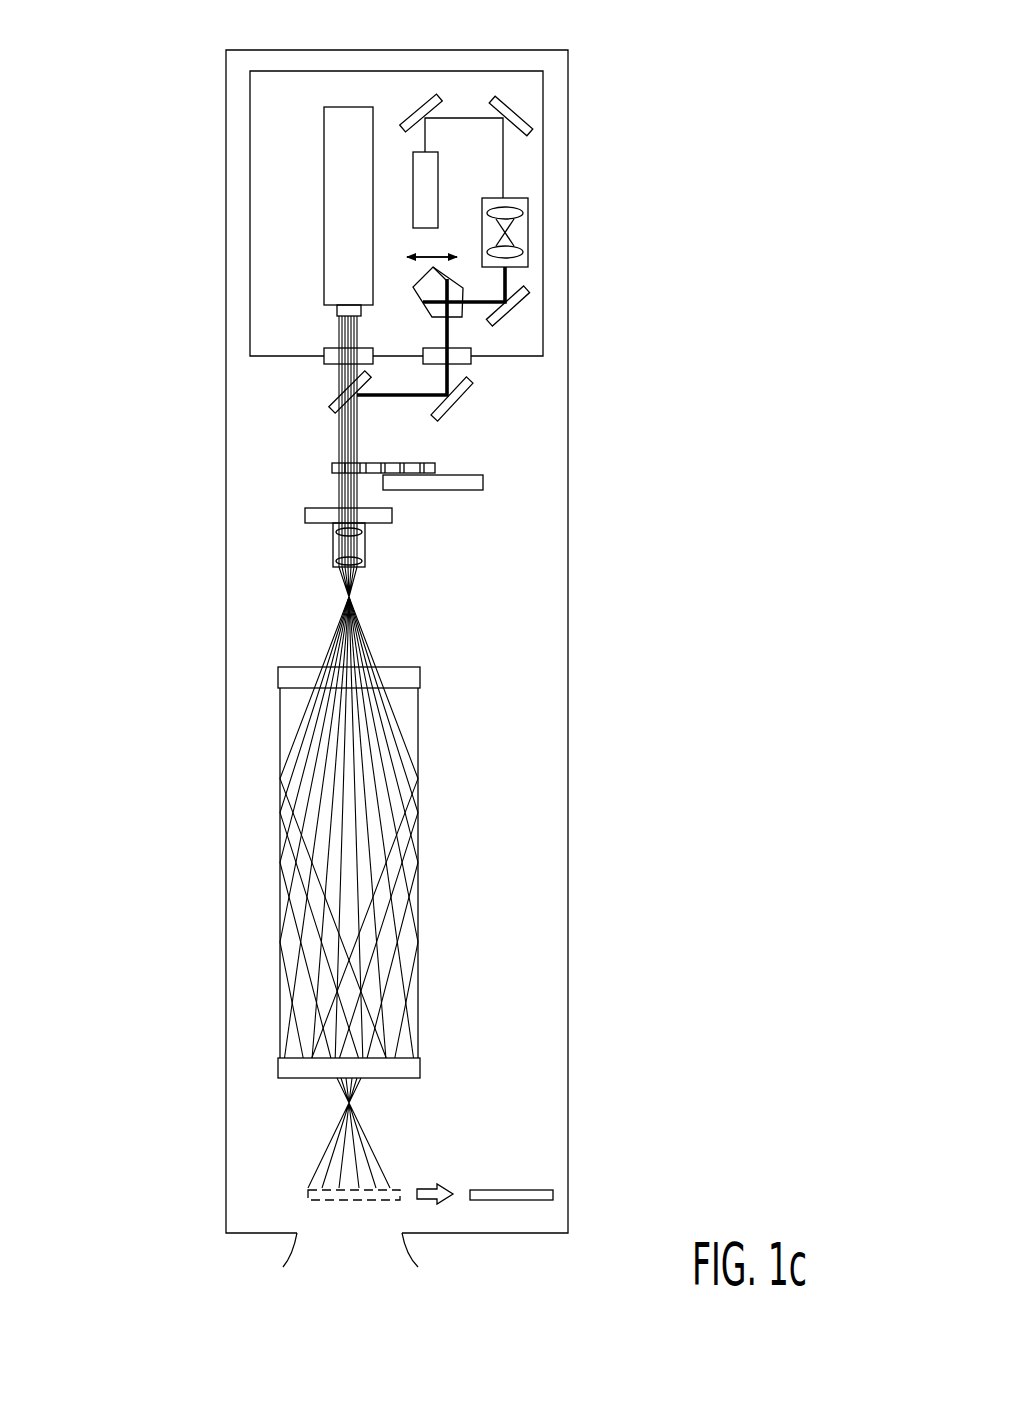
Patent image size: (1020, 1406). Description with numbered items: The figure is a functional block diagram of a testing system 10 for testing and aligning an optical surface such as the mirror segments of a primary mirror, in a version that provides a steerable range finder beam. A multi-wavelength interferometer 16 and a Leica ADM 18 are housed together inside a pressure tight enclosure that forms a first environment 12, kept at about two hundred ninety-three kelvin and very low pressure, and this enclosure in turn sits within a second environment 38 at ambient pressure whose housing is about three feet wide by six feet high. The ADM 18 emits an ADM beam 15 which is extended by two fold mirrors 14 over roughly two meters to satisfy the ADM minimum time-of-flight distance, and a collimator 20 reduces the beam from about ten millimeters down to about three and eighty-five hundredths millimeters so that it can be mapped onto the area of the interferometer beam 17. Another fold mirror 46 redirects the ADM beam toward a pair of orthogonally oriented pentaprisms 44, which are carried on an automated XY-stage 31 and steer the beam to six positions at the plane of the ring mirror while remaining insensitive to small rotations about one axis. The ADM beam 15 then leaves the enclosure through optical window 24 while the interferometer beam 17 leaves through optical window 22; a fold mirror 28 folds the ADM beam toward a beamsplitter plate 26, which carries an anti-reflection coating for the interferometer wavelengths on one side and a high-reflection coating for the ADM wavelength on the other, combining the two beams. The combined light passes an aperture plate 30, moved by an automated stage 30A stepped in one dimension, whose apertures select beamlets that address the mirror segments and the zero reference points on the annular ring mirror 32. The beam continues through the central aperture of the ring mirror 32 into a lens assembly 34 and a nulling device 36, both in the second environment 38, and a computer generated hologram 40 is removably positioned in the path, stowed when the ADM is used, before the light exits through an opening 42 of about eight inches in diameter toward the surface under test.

The testing system 10 is at (759, 52).
The first environment 12 is at (272, 127).
The fold mirrors 14 is at (437, 96).
The ADM beam 15 is at (508, 190).
The multi-wavelength interferometer 16 is at (322, 222).
The interferometer beam 17 is at (340, 378).
The Leica ADM 18 is at (438, 168).
The collimator 20 is at (530, 235).
The optical window 22 is at (323, 348).
The optical window 24 is at (471, 357).
The beamsplitter plate 26 is at (334, 408).
The fold mirror 28 is at (463, 395).
The aperture plate 30 is at (437, 463).
The automated stage 30A is at (468, 490).
The automated XY-stage 31 is at (418, 287).
The ring mirror 32 is at (304, 513).
The lens assembly 34 is at (333, 563).
The nulling device 36 is at (283, 866).
The second environment 38 is at (522, 867).
The computer generated hologram 40 is at (553, 1195).
The opening 42 is at (367, 1252).
The pentaprisms 44 is at (462, 320).
The fold mirror 46 is at (527, 292).